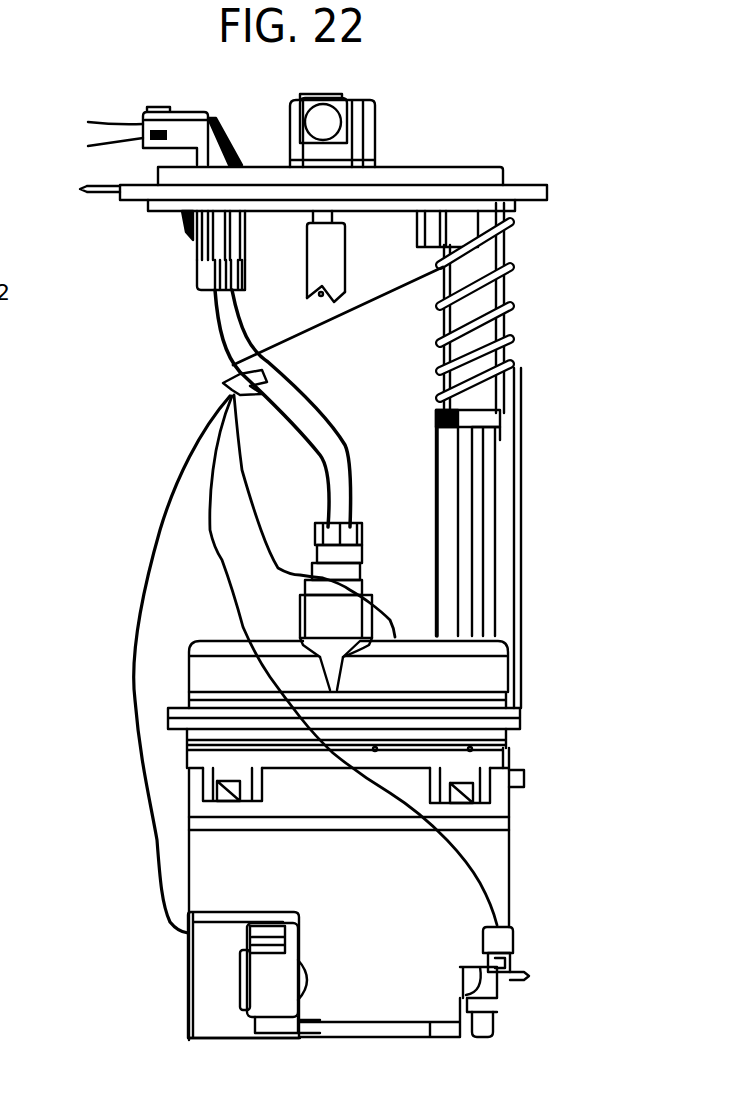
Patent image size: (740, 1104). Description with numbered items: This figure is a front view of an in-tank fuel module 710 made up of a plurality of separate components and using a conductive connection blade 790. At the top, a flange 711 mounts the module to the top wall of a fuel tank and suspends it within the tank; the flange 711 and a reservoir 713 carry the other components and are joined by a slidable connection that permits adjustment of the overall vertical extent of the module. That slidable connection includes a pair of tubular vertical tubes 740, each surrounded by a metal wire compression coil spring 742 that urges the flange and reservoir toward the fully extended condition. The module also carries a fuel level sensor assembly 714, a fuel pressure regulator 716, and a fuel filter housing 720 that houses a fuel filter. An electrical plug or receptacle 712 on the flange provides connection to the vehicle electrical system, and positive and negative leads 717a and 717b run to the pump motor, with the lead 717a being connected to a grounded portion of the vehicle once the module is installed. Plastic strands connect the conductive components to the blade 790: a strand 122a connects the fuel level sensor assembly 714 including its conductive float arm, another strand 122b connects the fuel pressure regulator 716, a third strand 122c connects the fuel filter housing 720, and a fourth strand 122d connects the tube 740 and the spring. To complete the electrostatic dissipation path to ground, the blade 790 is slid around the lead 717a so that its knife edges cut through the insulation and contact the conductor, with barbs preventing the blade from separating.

The flange 711 is at (452, 167).
The electrical plug or receptacle 712 is at (246, 232).
The in-tank fuel module 710 is at (545, 408).
The tubular vertical tube 740 is at (443, 314).
The metal wire compression coil spring 742 is at (443, 370).
The fourth strand 122d is at (297, 336).
The blade 790 is at (235, 378).
The negative lead 717b is at (320, 413).
The positive lead 717a is at (317, 457).
The reservoir 713 is at (436, 507).
The third strand 122c is at (262, 553).
The fuel filter housing 720 is at (417, 660).
The strand 122b is at (150, 798).
The strand 122a is at (460, 858).
The fuel level sensor assembly 714 is at (517, 960).
The fuel pressure regulator 716 is at (283, 968).